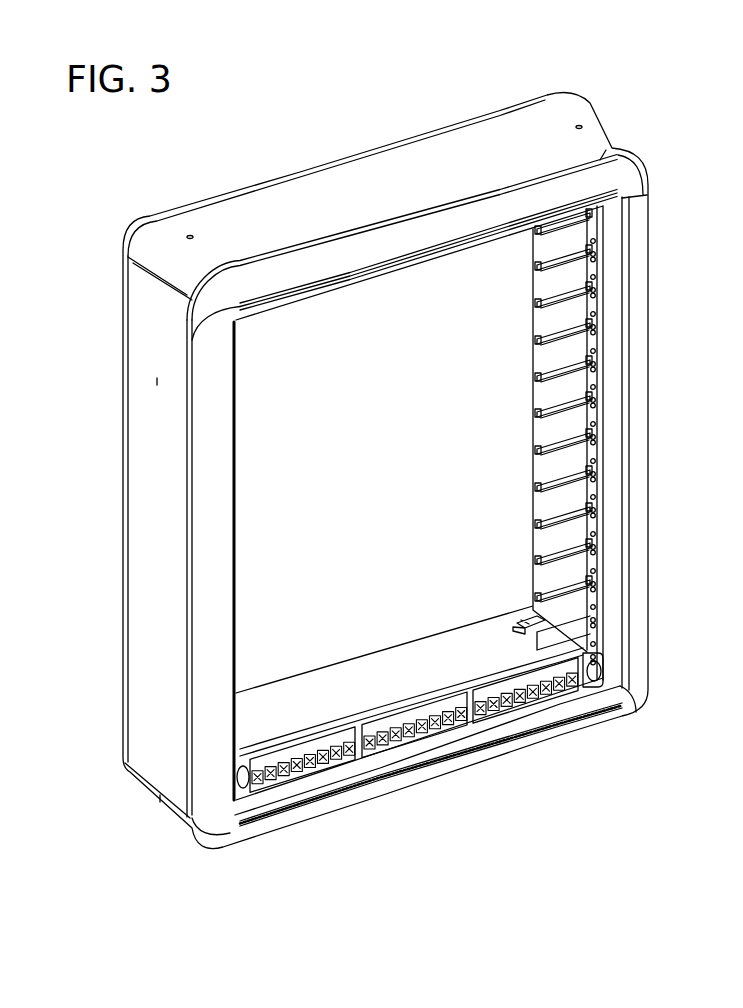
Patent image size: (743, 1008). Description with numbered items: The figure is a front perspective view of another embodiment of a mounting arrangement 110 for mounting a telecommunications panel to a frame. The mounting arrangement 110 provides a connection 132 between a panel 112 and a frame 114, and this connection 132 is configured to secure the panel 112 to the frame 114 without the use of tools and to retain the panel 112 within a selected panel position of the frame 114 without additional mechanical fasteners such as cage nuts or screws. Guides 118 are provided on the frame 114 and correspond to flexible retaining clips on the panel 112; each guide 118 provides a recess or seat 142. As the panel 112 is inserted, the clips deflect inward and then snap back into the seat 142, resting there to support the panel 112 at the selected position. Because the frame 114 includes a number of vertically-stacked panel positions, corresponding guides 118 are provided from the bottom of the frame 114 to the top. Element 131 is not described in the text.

The mounting arrangement 110 is at (613, 615).
The panel 112 is at (375, 678).
The frame 114 is at (375, 185).
The guides 118 is at (542, 392).
The end cap 131 is at (613, 675).
The connection 132 is at (517, 593).
The seat 142 is at (553, 278).